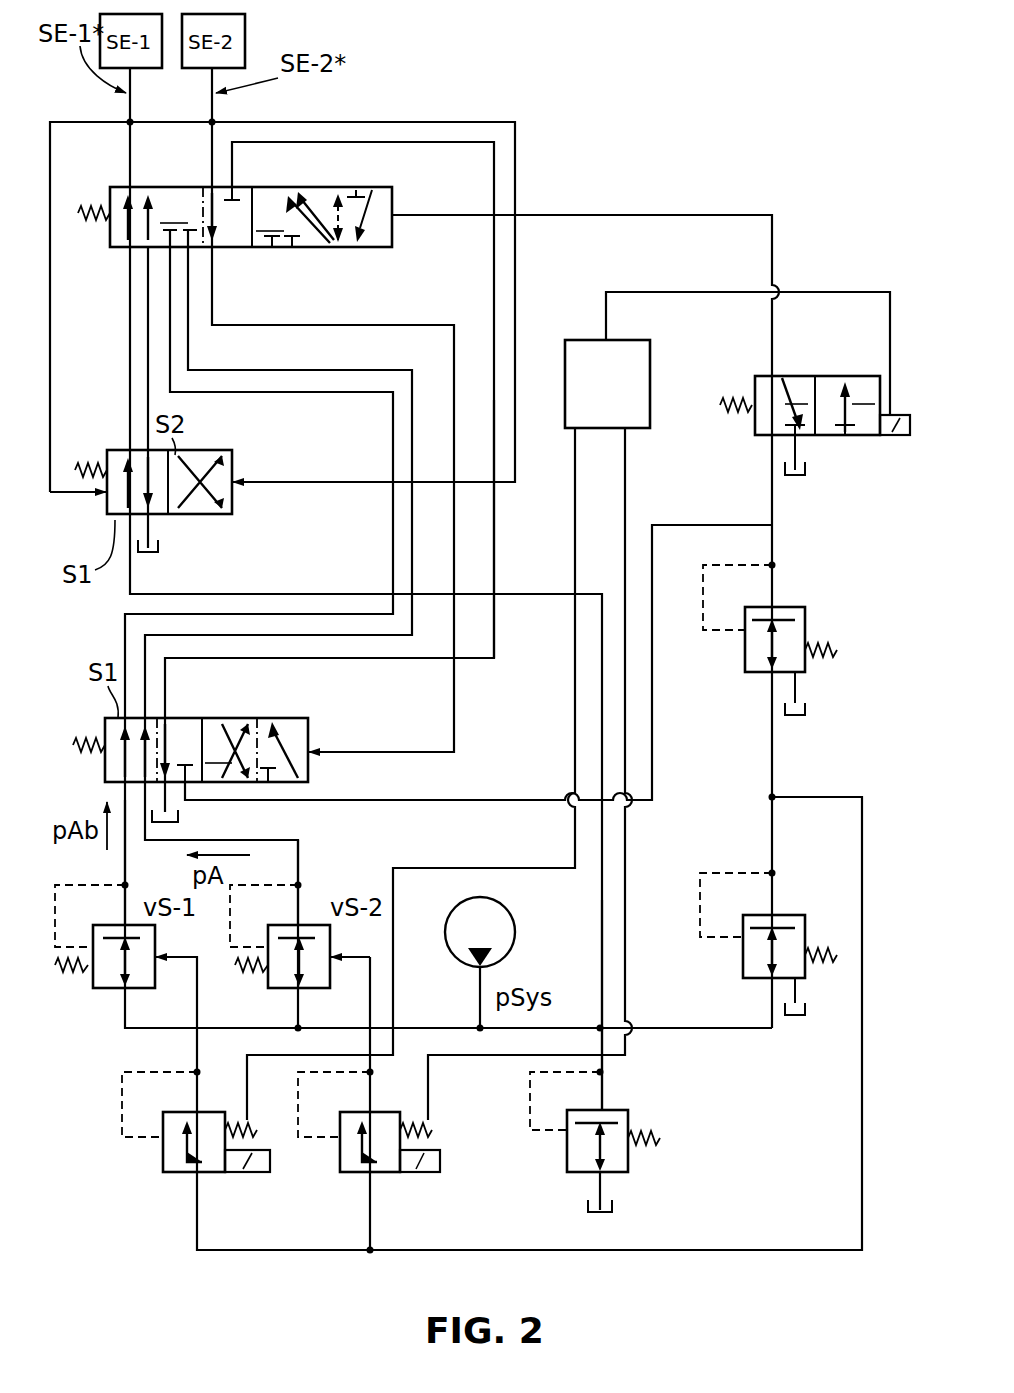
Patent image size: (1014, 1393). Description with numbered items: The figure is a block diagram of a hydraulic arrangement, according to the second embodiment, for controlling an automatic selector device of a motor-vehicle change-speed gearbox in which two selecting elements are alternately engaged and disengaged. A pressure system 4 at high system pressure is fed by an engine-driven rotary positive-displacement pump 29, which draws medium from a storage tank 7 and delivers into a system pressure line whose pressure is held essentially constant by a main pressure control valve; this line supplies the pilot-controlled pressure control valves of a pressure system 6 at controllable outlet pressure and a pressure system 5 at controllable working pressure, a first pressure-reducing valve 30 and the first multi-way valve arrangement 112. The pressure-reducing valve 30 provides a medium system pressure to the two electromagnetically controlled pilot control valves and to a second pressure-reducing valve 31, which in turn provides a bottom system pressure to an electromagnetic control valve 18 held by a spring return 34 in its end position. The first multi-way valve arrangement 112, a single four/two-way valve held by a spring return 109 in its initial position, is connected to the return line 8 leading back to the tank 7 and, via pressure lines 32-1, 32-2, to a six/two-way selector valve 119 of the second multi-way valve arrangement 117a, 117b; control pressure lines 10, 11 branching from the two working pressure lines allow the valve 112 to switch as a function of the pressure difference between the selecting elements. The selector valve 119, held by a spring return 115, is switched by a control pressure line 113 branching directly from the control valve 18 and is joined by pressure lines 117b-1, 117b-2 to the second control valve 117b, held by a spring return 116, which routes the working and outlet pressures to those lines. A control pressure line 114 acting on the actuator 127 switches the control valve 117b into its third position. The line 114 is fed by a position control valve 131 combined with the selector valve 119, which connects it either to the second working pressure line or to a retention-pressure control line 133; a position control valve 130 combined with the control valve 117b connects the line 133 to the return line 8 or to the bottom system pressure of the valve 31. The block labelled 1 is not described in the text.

The hydraulic control unit 1 is at (615, 398).
The pressure system 4 is at (642, 1176).
The pressure system 5 is at (405, 1180).
The pressure system 6 is at (170, 1222).
The storage tank 7 is at (160, 556).
The return line 8 is at (150, 536).
The control pressure line 10 is at (50, 184).
The control pressure line 11 is at (520, 312).
The electromagnetically controlled 3/2-way control valve 18 is at (815, 342).
The hydraulic rotary positive-displacement pump 29 is at (494, 935).
The first pressure-reducing valve 30 is at (803, 906).
The second pressure-reducing valve 31 is at (808, 609).
The pressure line 32-1 is at (127, 297).
The pressure line 32-2 is at (146, 333).
The spring return 34 is at (728, 402).
The spring return 109 is at (92, 466).
The first multi-way valve arrangement 112 is at (265, 450).
The control pressure line 113 is at (592, 212).
The control pressure line 114 is at (458, 712).
The spring return 115 is at (88, 205).
The spring return 116 is at (82, 745).
The second multi-way valve arrangement (selector valve part) 117a is at (243, 252).
The second control valve 117b is at (105, 768).
The pressure line 117b-1 is at (390, 515).
The pressure line 117b-2 is at (410, 546).
The 6/2-way selector valve 119 is at (200, 190).
The actuator 127 is at (312, 770).
The 3/2-way position control valve 130 is at (187, 717).
The 3/2-way position control valve 131 is at (242, 190).
The retention-pressure control line 133 is at (499, 540).